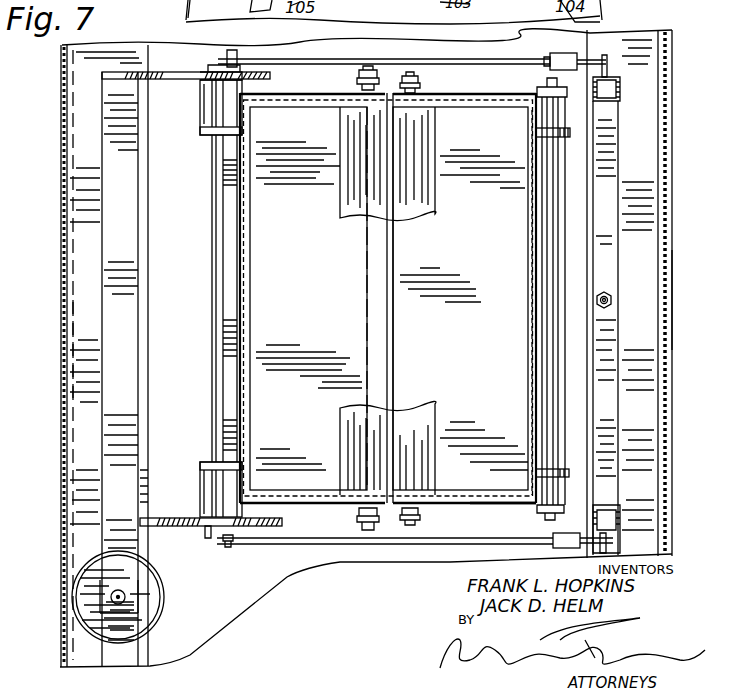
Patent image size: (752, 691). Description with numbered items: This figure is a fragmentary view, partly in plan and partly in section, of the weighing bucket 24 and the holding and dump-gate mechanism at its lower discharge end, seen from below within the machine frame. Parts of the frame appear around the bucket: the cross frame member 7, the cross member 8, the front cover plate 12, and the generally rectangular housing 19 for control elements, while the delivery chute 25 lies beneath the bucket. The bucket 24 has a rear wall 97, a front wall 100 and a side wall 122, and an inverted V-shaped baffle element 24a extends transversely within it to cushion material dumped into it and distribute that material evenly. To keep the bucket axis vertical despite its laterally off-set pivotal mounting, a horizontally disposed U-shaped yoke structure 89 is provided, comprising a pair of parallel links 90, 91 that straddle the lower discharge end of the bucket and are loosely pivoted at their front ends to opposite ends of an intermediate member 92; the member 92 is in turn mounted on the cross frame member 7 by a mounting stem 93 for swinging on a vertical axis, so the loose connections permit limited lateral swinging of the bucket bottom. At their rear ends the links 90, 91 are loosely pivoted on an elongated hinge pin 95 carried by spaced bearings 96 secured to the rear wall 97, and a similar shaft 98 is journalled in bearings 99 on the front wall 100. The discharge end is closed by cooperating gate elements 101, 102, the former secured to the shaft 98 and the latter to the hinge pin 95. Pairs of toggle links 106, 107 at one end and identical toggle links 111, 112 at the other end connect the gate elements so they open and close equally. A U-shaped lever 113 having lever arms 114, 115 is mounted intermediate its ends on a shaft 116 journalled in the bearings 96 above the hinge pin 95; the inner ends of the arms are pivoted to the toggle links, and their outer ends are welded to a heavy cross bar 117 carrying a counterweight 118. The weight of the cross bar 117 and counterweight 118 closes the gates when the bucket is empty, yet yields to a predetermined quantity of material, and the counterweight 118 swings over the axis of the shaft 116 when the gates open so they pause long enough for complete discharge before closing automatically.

The cross frame member 7 is at (658, 230).
The cross member 8 is at (80, 343).
The front cover plate 12 is at (673, 300).
The housing 19 is at (61, 252).
The weighing bucket 24 is at (526, 338).
The baffle element 24a is at (436, 206).
The delivery chute 25 is at (352, 563).
The yoke structure 89 is at (622, 426).
The link 90 is at (490, 46).
The link 91 is at (280, 544).
The intermediate member 92 is at (607, 175).
The mounting stem 93 is at (612, 292).
The hinge pin 95 is at (229, 548).
The bearings 96 is at (200, 136).
The rear wall 97 is at (242, 424).
The shaft 98 is at (556, 396).
The bearings 99 is at (536, 133).
The front wall 100 is at (546, 265).
The gate element 101 is at (460, 298).
The gate element 102 is at (308, 298).
The toggle link 106 is at (434, 520).
The toggle link 107 is at (357, 520).
The toggle link 111 is at (422, 80).
The toggle link 112 is at (357, 78).
The lever 113 is at (208, 540).
The lever arm 114 is at (166, 527).
The lever arm 115 is at (170, 79).
The shaft 116 is at (222, 291).
The cross bar 117 is at (125, 377).
The counterweight 118 is at (150, 620).
The side wall 122 is at (495, 503).